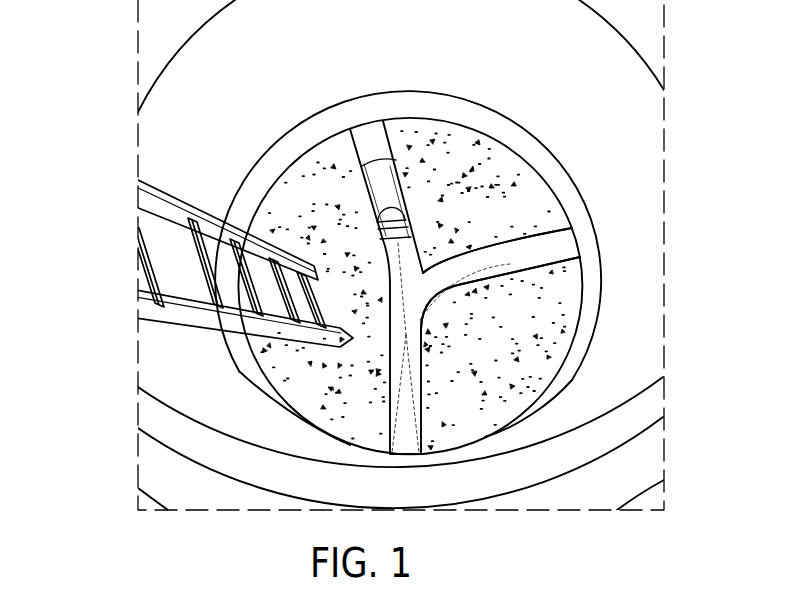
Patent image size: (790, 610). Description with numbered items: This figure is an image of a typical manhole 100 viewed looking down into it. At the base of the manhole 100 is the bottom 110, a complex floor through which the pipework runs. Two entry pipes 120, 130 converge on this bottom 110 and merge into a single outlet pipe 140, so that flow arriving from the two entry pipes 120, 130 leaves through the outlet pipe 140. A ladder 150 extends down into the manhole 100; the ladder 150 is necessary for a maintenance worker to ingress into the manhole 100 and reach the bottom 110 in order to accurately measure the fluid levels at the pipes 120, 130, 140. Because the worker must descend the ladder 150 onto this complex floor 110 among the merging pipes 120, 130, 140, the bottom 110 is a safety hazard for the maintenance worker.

The manhole 100 is at (111, 56).
The bottom 110 is at (301, 217).
The entry pipe 120 is at (382, 150).
The entry pipe 130 is at (553, 248).
The outlet pipe 140 is at (423, 420).
The ladder 150 is at (175, 318).